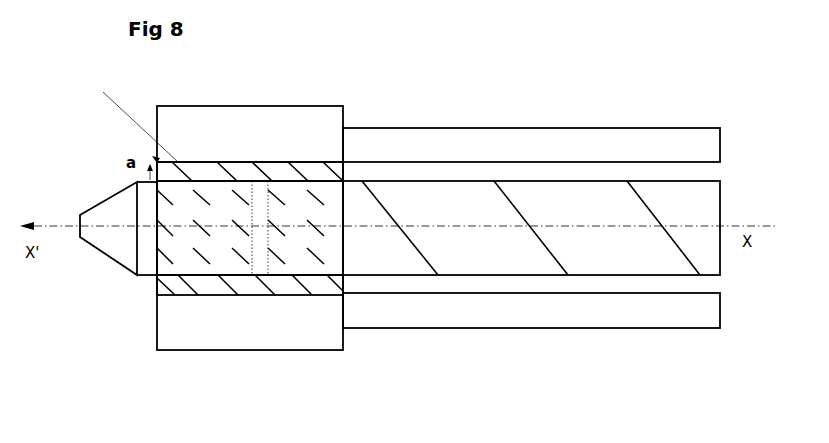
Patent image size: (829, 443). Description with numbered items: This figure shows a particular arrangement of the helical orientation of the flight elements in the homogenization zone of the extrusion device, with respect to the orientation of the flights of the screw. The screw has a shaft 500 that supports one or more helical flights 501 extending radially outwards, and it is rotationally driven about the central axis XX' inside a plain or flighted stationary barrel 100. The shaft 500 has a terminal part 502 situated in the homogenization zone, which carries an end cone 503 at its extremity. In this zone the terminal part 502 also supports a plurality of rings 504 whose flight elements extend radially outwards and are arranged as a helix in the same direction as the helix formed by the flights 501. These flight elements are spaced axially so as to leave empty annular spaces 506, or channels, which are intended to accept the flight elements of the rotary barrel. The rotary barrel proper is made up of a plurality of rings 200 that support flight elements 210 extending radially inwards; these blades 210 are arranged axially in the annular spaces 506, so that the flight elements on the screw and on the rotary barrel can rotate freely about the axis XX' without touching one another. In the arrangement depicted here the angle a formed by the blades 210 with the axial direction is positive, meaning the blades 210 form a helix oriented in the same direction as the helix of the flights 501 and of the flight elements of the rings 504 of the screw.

The stationary barrel 100 is at (512, 312).
The rings of the rotary barrel 200 is at (243, 318).
The flight elements of the rotary barrel 210 is at (240, 162).
The shaft of the screw 500 is at (531, 210).
The helical flights 501 is at (390, 212).
The terminal part of the shaft 502 is at (300, 258).
The end cone 503 is at (108, 222).
The rings of the screw 504 is at (247, 255).
The annular spaces 506 is at (258, 217).